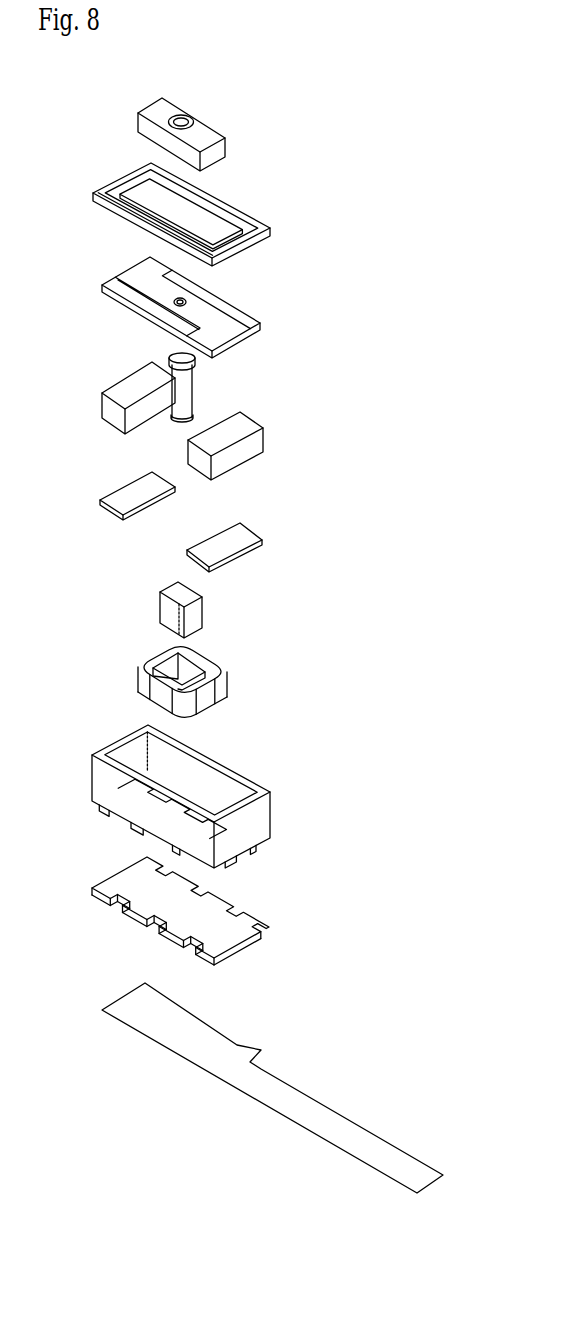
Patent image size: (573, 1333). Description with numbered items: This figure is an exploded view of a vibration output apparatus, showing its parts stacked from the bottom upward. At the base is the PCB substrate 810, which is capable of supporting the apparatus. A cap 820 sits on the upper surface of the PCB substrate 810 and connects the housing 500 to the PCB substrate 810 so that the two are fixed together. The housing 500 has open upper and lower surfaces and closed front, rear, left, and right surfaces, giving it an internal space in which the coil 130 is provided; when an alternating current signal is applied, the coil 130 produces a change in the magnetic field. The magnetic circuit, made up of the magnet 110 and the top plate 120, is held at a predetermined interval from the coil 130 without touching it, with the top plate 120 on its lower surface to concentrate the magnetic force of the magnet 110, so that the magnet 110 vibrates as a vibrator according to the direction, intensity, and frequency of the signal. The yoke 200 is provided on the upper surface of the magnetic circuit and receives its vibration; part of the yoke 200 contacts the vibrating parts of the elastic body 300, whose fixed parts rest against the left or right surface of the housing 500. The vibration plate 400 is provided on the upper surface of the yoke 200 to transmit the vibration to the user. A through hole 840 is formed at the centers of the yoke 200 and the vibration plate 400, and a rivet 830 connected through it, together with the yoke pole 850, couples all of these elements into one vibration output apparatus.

The magnet 110 is at (134, 379).
The top plate 120 is at (130, 488).
The coil 130 is at (208, 662).
The yoke 200 is at (243, 335).
The elastic body 300 is at (268, 225).
The vibration plate 400 is at (206, 127).
The housing 500 is at (272, 810).
The printed circuit board (PCB) substrate 810 is at (247, 1040).
The cap 820 is at (228, 933).
The rivet 830 is at (184, 386).
The through hole 840 is at (178, 117).
The yoke pole 850 is at (197, 612).